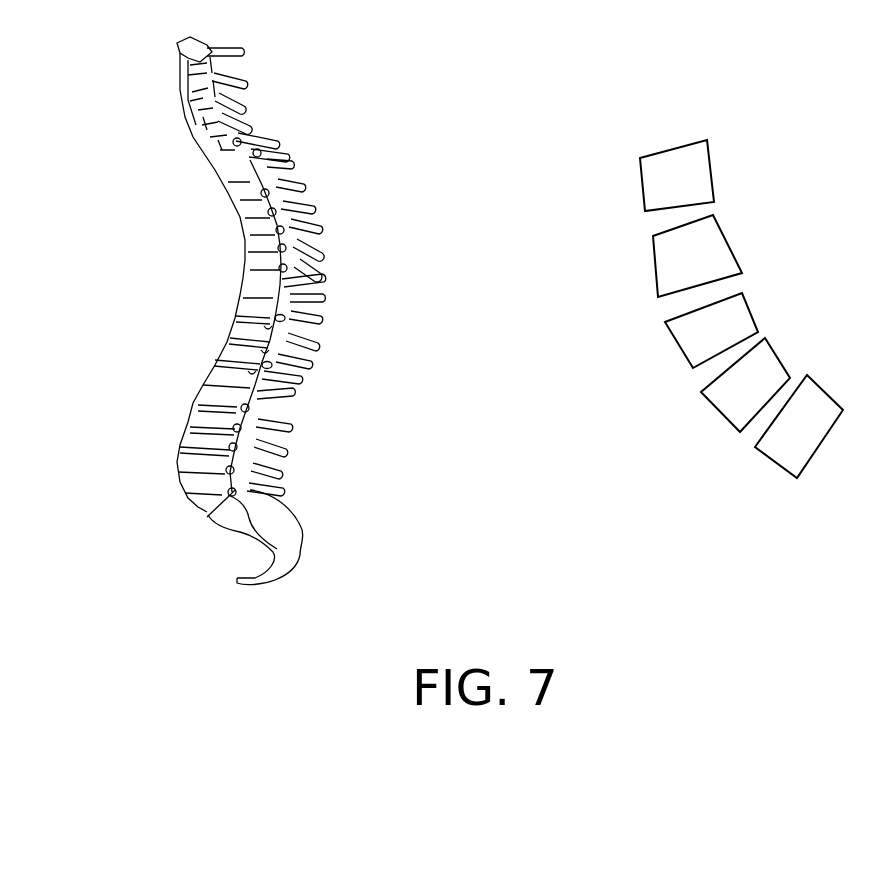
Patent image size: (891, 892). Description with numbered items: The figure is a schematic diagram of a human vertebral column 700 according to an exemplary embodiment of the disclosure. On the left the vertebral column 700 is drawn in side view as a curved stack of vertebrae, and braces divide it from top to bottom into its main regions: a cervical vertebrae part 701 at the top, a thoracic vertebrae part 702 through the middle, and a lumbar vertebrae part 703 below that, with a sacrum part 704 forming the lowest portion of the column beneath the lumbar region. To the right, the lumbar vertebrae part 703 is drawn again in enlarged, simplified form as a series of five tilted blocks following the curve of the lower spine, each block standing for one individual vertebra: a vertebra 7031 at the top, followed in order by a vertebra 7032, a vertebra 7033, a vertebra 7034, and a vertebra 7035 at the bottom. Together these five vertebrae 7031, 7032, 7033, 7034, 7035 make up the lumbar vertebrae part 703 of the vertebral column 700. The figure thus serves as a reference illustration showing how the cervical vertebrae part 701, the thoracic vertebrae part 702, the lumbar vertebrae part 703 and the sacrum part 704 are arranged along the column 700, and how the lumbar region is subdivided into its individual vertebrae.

The human vertebral column 700 is at (487, 316).
The cervical vertebrae part 701 is at (343, 53).
The thoracic vertebrae part 702 is at (343, 163).
The lumbar vertebrae part 703 is at (343, 402).
The sacrum part 704 is at (212, 505).
The vertebra 7031 is at (658, 182).
The vertebra 7032 is at (660, 267).
The vertebra 7033 is at (690, 343).
The vertebra 7034 is at (730, 402).
The vertebra 7035 is at (782, 455).